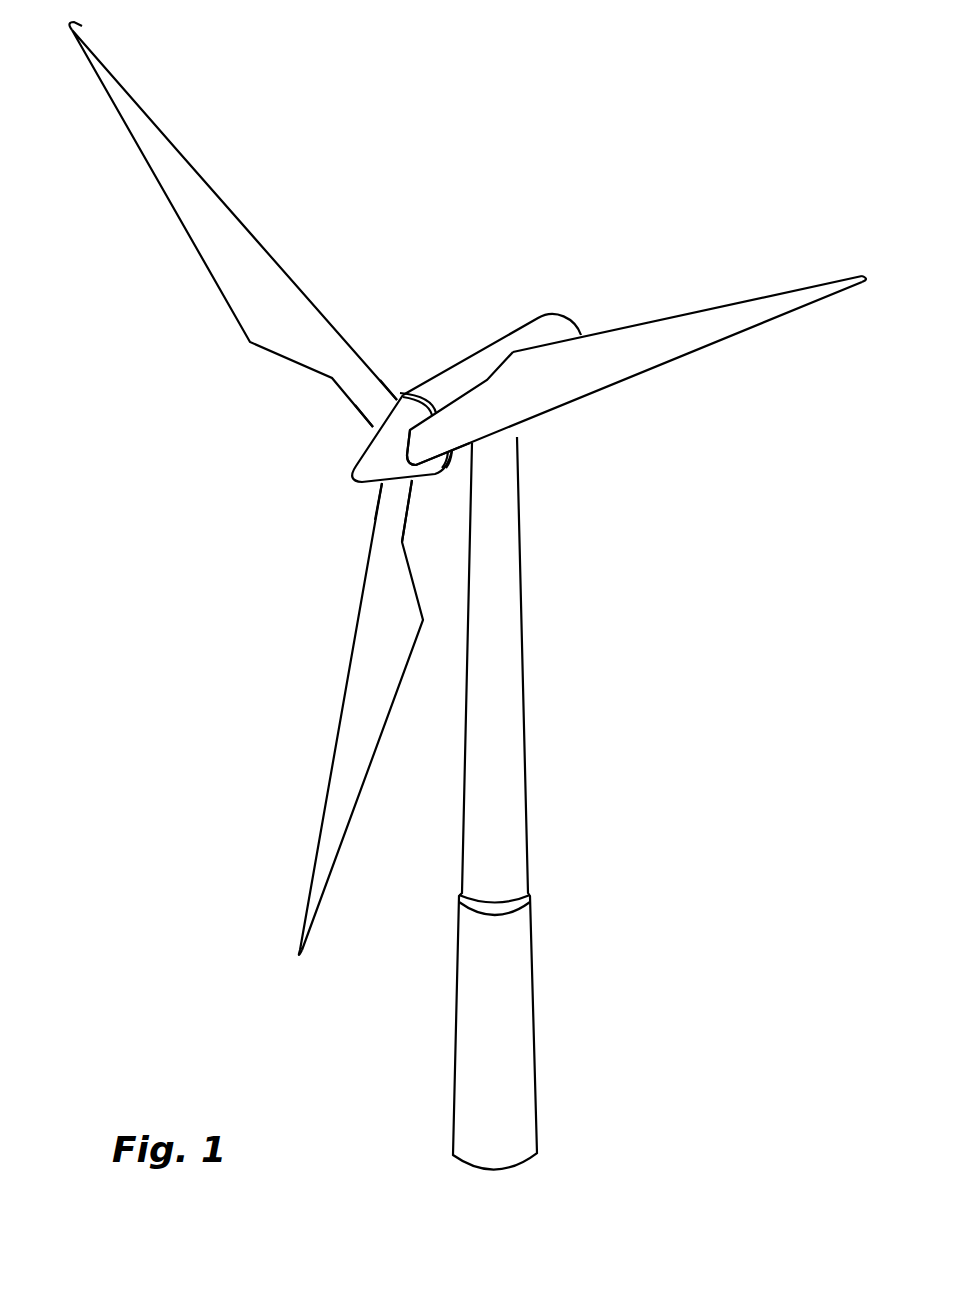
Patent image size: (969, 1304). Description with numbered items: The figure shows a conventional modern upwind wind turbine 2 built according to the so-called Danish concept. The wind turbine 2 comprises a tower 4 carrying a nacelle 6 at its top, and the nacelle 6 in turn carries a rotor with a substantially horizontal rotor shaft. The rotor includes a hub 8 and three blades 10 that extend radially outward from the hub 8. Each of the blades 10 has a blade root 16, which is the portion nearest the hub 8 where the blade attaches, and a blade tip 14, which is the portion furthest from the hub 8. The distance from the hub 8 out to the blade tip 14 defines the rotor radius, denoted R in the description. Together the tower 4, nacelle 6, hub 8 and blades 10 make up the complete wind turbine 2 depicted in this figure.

The wind turbine 2 is at (620, 739).
The tower 4 is at (512, 665).
The nacelle 6 is at (458, 377).
The hub 8 is at (372, 457).
The blades 10 is at (263, 312).
The blade tip 14 is at (110, 80).
The blade root 16 is at (378, 413).